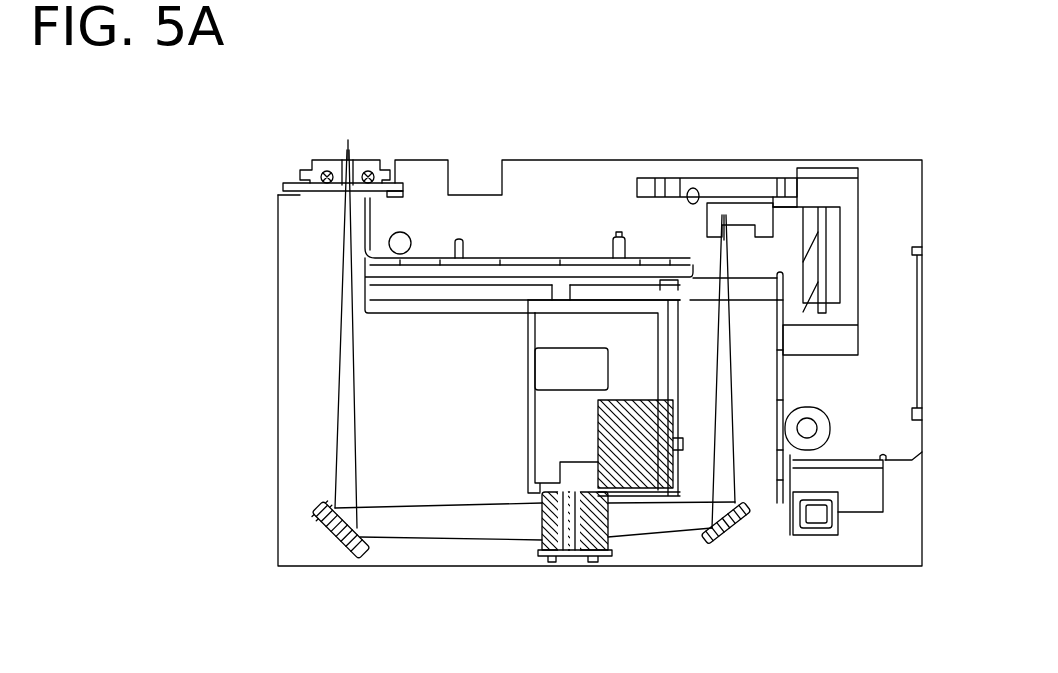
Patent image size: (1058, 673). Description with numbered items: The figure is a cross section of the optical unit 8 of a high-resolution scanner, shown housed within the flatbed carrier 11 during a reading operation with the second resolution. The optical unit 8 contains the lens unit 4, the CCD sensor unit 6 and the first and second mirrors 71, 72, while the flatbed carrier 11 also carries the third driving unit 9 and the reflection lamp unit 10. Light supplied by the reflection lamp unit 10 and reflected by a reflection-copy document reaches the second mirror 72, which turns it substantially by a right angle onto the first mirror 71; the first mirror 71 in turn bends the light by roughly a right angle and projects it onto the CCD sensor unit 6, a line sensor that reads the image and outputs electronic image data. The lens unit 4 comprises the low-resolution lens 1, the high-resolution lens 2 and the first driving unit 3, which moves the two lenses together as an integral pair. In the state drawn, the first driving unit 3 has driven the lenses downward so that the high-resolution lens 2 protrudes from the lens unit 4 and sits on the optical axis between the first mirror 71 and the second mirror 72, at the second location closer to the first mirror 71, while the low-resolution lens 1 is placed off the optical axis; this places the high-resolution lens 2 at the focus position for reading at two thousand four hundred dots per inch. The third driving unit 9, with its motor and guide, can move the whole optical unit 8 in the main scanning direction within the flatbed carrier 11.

The low-resolution lens 1 is at (638, 455).
The high-resolution lens 2 is at (546, 494).
The first driving unit 3 is at (558, 420).
The lens unit 4 is at (530, 433).
The CCD sensor unit 6 is at (720, 178).
The optical unit 8 is at (533, 257).
The third driving unit 9 is at (810, 537).
The reflection lamp unit 10 is at (365, 158).
The flatbed carrier 11 is at (878, 566).
The first mirror 71 is at (742, 532).
The second mirror 72 is at (367, 553).